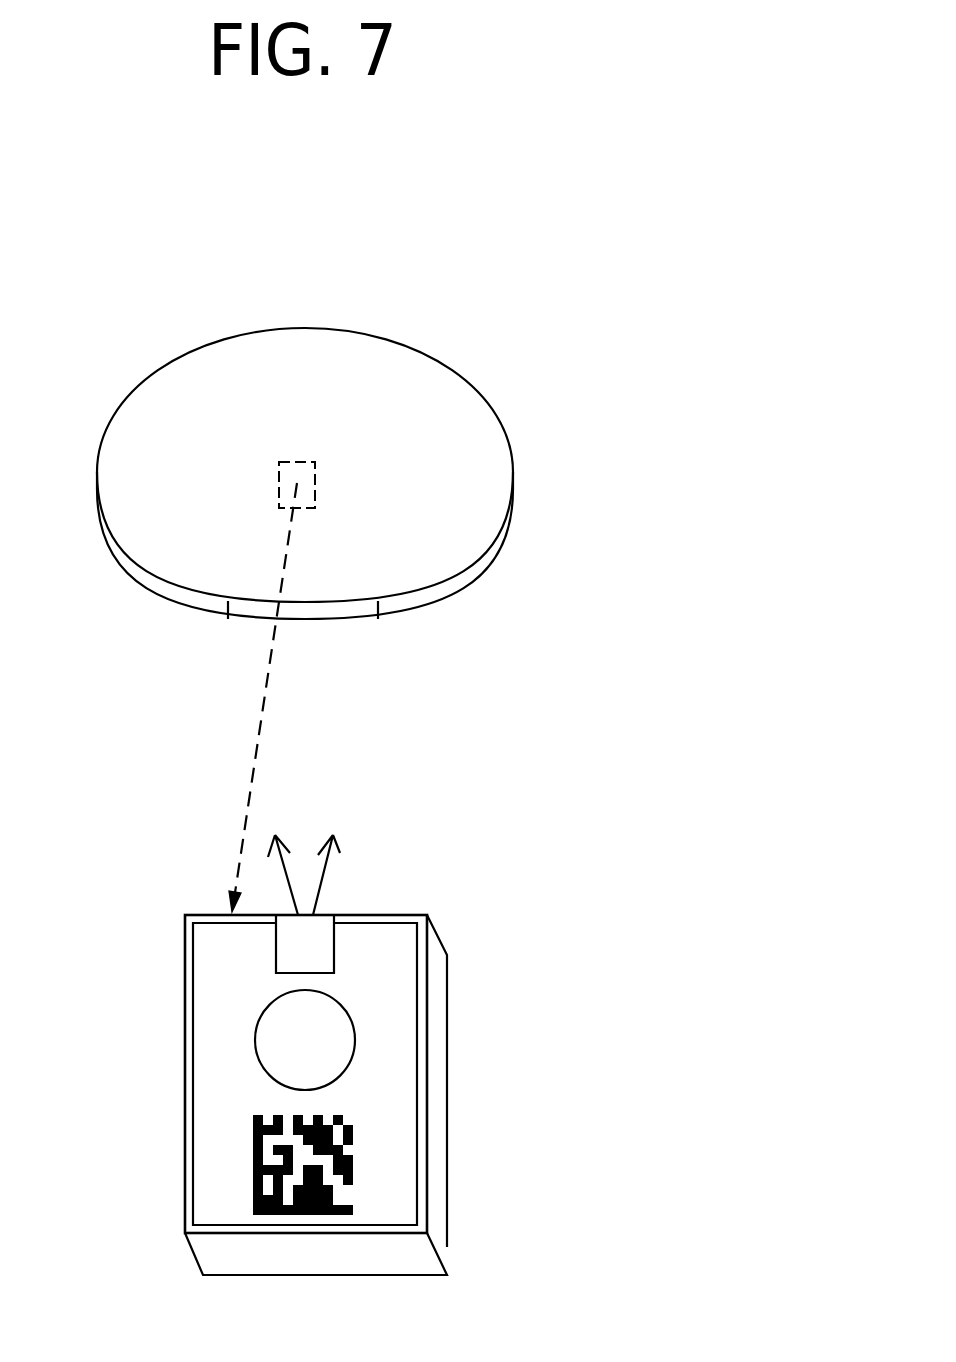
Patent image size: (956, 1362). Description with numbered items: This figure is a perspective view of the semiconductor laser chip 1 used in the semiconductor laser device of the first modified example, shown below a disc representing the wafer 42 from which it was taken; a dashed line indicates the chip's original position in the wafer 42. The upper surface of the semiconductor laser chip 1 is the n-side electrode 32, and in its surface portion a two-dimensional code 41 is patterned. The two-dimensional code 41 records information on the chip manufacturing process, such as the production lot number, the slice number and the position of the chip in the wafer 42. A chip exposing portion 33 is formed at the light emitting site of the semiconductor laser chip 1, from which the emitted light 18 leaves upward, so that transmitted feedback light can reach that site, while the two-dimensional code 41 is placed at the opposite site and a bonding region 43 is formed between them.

The semiconductor laser chip 1 is at (435, 977).
The emitted light 18 is at (312, 877).
The n-side electrode 32 is at (418, 1062).
The chip exposing portion 33 is at (297, 955).
The two-dimensional code 41 is at (253, 1160).
The wafer 42 is at (475, 390).
The bonding region 43 is at (253, 1042).